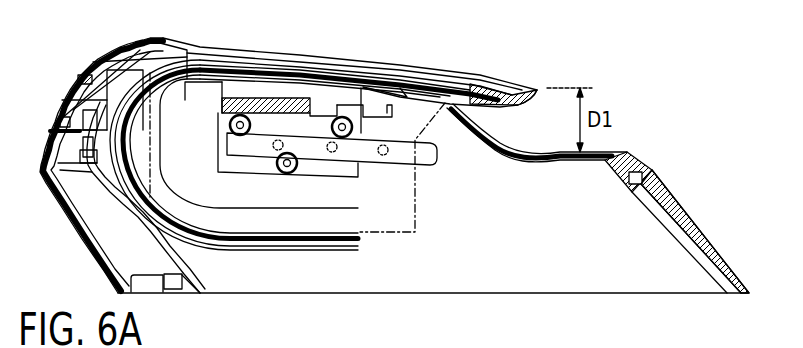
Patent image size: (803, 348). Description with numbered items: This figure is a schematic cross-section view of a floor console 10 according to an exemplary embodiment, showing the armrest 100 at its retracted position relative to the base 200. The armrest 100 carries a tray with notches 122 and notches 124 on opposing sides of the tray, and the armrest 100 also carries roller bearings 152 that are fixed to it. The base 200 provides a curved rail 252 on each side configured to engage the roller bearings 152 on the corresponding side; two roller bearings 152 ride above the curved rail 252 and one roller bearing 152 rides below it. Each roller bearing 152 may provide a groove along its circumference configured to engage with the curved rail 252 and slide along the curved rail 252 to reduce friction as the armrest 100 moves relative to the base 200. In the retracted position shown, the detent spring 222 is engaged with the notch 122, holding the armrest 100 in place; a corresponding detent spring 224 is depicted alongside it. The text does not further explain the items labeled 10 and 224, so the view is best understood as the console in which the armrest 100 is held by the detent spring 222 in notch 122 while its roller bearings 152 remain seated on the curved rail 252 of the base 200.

The electronic device 10 is at (55, 83).
The armrest 100 is at (532, 63).
The base 200 is at (78, 235).
The roller bearing 152 is at (240, 114).
The notch 124 is at (272, 99).
The carrier plate 224 is at (297, 101).
The detent spring 222 is at (328, 102).
The notch 122 is at (348, 103).
The curved rail 252 is at (413, 140).